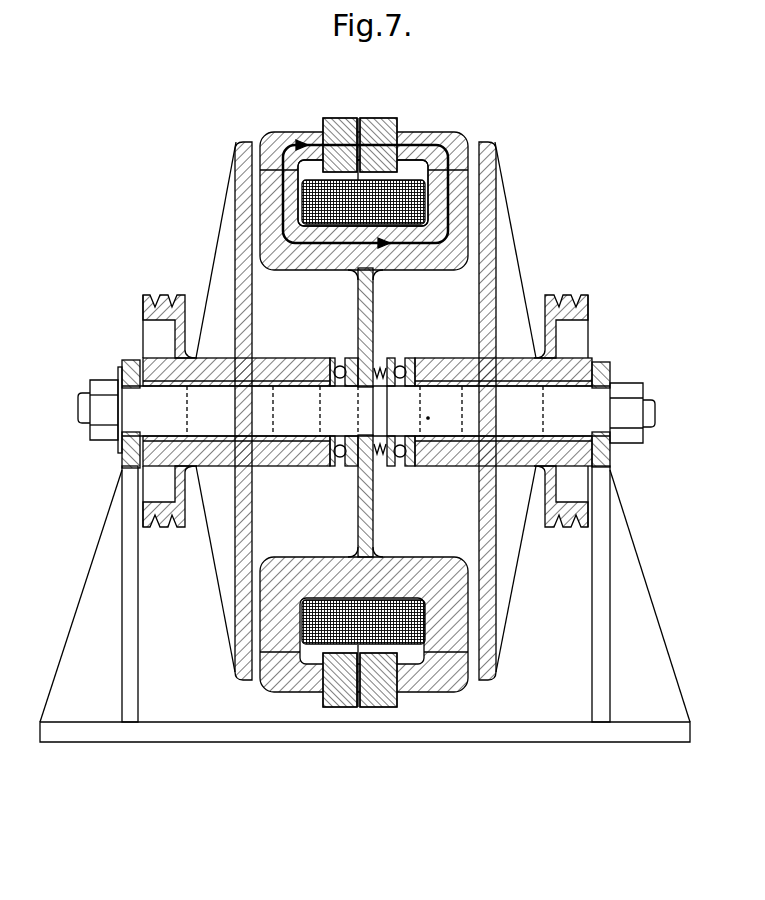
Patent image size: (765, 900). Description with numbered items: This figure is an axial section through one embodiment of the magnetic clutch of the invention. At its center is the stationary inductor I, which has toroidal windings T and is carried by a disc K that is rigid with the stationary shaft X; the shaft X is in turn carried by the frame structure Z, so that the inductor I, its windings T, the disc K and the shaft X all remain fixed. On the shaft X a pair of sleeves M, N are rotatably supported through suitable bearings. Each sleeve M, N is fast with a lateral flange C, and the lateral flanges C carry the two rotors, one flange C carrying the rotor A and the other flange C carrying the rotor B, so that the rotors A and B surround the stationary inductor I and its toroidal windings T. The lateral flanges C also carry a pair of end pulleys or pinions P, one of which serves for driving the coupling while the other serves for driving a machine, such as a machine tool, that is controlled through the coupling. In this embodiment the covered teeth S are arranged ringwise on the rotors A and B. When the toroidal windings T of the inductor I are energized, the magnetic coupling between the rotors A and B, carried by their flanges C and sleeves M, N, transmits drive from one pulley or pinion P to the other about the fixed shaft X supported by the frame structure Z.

The rotor A is at (300, 150).
The rotor B is at (440, 142).
The lateral flanges C is at (241, 237).
The stationary inductor I is at (453, 218).
The disc K is at (374, 313).
The sleeve M is at (437, 358).
The sleeve N is at (297, 358).
The end pulleys or pinions P is at (150, 294).
The covered teeth S is at (337, 118).
The toroidal windings T is at (450, 190).
The stationary shaft X is at (427, 408).
The frame structure Z is at (638, 611).